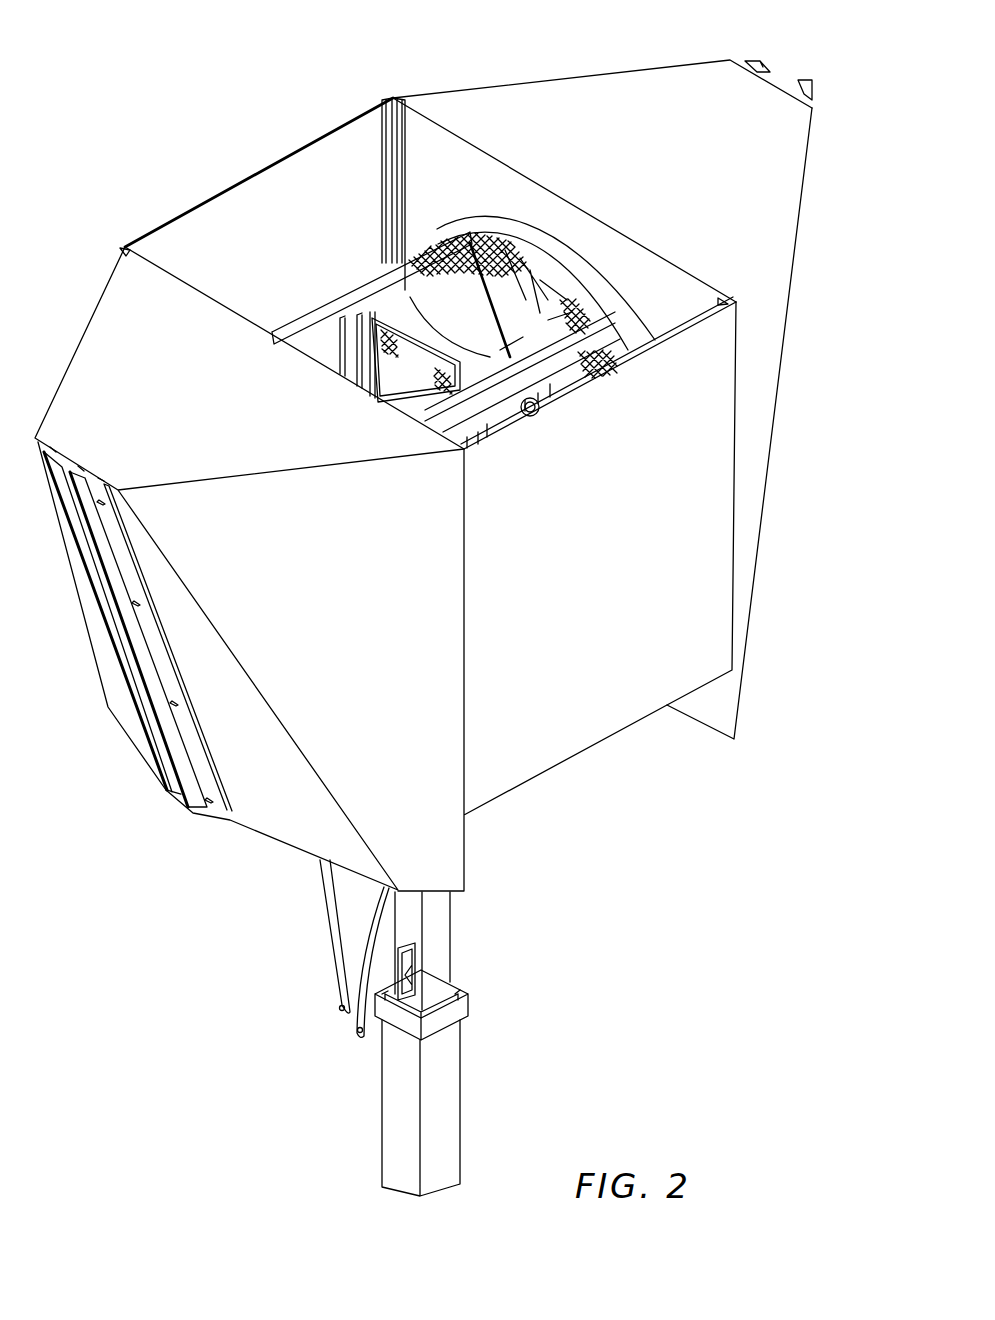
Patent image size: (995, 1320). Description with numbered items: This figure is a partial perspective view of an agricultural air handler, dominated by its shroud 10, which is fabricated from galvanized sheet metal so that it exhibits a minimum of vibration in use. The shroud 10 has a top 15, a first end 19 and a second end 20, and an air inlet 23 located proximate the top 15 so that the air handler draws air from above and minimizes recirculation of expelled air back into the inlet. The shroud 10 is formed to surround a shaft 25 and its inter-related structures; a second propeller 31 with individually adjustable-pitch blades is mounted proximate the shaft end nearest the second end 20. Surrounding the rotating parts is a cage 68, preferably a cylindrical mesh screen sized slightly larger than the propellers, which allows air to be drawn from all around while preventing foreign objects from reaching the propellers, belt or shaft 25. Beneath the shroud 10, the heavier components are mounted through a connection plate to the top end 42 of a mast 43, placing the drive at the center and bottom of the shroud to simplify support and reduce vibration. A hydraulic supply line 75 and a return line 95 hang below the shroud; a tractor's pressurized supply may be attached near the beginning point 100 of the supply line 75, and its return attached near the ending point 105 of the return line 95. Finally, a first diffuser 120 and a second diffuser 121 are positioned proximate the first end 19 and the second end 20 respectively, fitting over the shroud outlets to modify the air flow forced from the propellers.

The shroud 10 is at (165, 192).
The top 15 is at (228, 325).
The first end 19 is at (447, 843).
The second end 20 is at (735, 660).
The air inlet 23 is at (420, 146).
The shaft 25 is at (530, 412).
The second propeller 31 is at (424, 250).
The top end 42 is at (437, 915).
The mast 43 is at (440, 1055).
The cage 68 is at (470, 243).
The supply line 75 is at (328, 915).
The return line 95 is at (374, 930).
The beginning point 100 is at (338, 1010).
The ending point 105 is at (355, 1027).
The first diffuser 120 is at (197, 812).
The second diffuser 121 is at (790, 72).